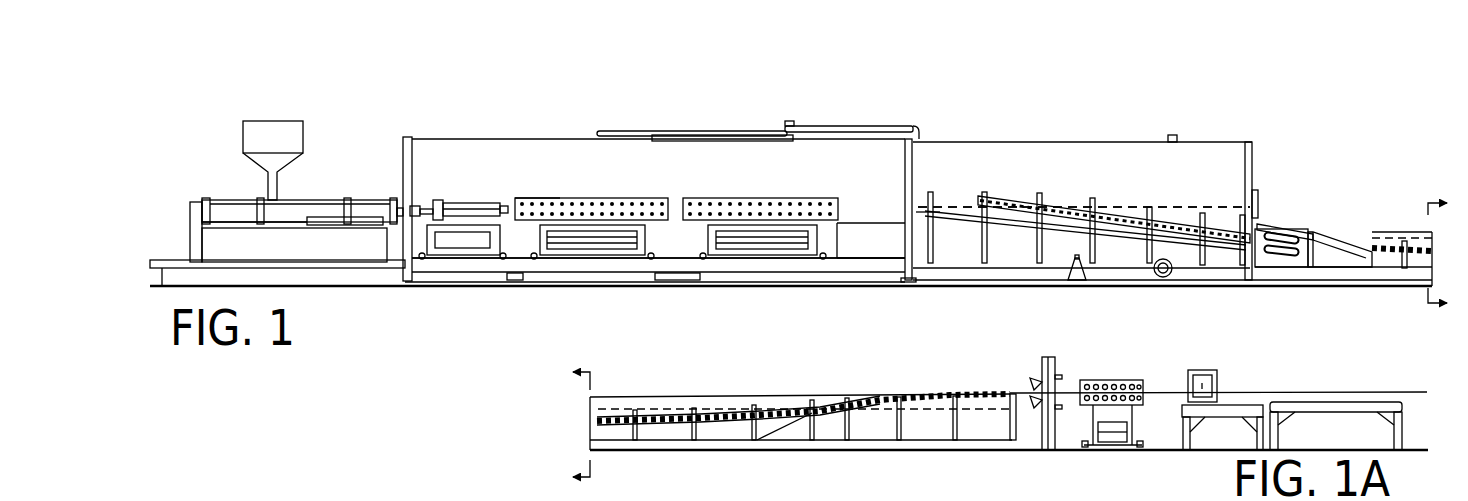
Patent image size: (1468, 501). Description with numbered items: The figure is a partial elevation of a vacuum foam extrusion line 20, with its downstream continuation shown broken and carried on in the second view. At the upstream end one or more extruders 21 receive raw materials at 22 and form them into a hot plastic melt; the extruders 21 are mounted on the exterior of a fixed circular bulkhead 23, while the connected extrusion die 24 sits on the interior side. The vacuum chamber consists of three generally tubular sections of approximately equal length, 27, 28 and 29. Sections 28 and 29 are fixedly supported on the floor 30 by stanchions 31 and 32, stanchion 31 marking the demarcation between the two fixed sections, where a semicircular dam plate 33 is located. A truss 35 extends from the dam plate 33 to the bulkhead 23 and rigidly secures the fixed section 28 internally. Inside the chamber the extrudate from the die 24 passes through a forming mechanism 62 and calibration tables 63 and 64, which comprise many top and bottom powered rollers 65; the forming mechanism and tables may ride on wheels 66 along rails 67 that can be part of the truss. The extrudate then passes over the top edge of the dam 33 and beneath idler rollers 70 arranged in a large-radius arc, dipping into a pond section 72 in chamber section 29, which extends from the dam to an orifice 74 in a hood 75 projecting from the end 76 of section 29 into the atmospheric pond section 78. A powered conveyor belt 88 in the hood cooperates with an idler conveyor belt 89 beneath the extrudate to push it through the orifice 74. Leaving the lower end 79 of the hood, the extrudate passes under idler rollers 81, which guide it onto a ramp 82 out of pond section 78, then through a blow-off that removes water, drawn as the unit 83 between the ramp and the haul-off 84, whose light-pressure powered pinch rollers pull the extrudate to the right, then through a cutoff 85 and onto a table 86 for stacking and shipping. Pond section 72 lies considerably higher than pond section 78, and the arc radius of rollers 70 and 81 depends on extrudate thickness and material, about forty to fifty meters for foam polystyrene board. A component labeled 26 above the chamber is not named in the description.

In FIG. 1, the extrusion line 20 is at (1101, 87).
In FIG. 1, the extruders 21 is at (334, 189).
In FIG. 1, the raw materials 22 is at (304, 135).
In FIG. 1, the fixed circular bulkhead 23 is at (402, 158).
In FIG. 1, the extrusion die 24 is at (418, 203).
In FIG. 1, the overhead support rail 26 is at (866, 110).
In FIG. 1, the tubular section 27 is at (519, 135).
In FIG. 1, the fixed tubular section 28 is at (720, 155).
In FIG. 1, the chamber section 29 is at (1109, 141).
In FIG. 1, the floor 30 is at (1027, 277).
In FIG. 1A, the floor 30 is at (1410, 448).
In FIG. 1, the stanchion 31 is at (922, 283).
In FIG. 1, the stanchion 32 is at (1086, 277).
In FIG. 1, the semicircular dam plate 33 is at (913, 230).
In FIG. 1, the truss 35 is at (876, 216).
In FIG. 1, the forming mechanism 62 is at (475, 203).
In FIG. 1, the calibration table 63 is at (618, 193).
In FIG. 1, the calibration table 64 is at (744, 190).
In FIG. 1, the powered rollers 65 is at (553, 197).
In FIG. 1, the wheels 66 is at (533, 259).
In FIG. 1, the rails 67 is at (848, 244).
In FIG. 1, the idler rollers 70 is at (1013, 197).
In FIG. 1, the pond section 72 is at (1199, 203).
In FIG. 1, the orifice 74 is at (1318, 234).
In FIG. 1, the hood 75 is at (1296, 226).
In FIG. 1, the end of vacuum chamber section 76 is at (1256, 177).
In FIG. 1, the atmospheric pond section 78 is at (1419, 226).
In FIG. 1A, the atmospheric pond section 78 is at (661, 397).
In FIG. 1, the lower end of hood 79 is at (1384, 246).
In FIG. 1, the idler rollers 81 is at (1416, 238).
In FIG. 1A, the idler rollers 81 is at (614, 417).
In FIG. 1A, the ramp 82 is at (870, 397).
In FIG. 1A, the vertical column 83 is at (1024, 384).
In FIG. 1A, the haul-off 84 is at (1127, 380).
In FIG. 1A, the cutoff 85 is at (1220, 388).
In FIG. 1A, the table 86 is at (1412, 422).
In FIG. 1, the powered conveyor belt 88 is at (1280, 232).
In FIG. 1, the idler conveyer belt 89 is at (1281, 256).